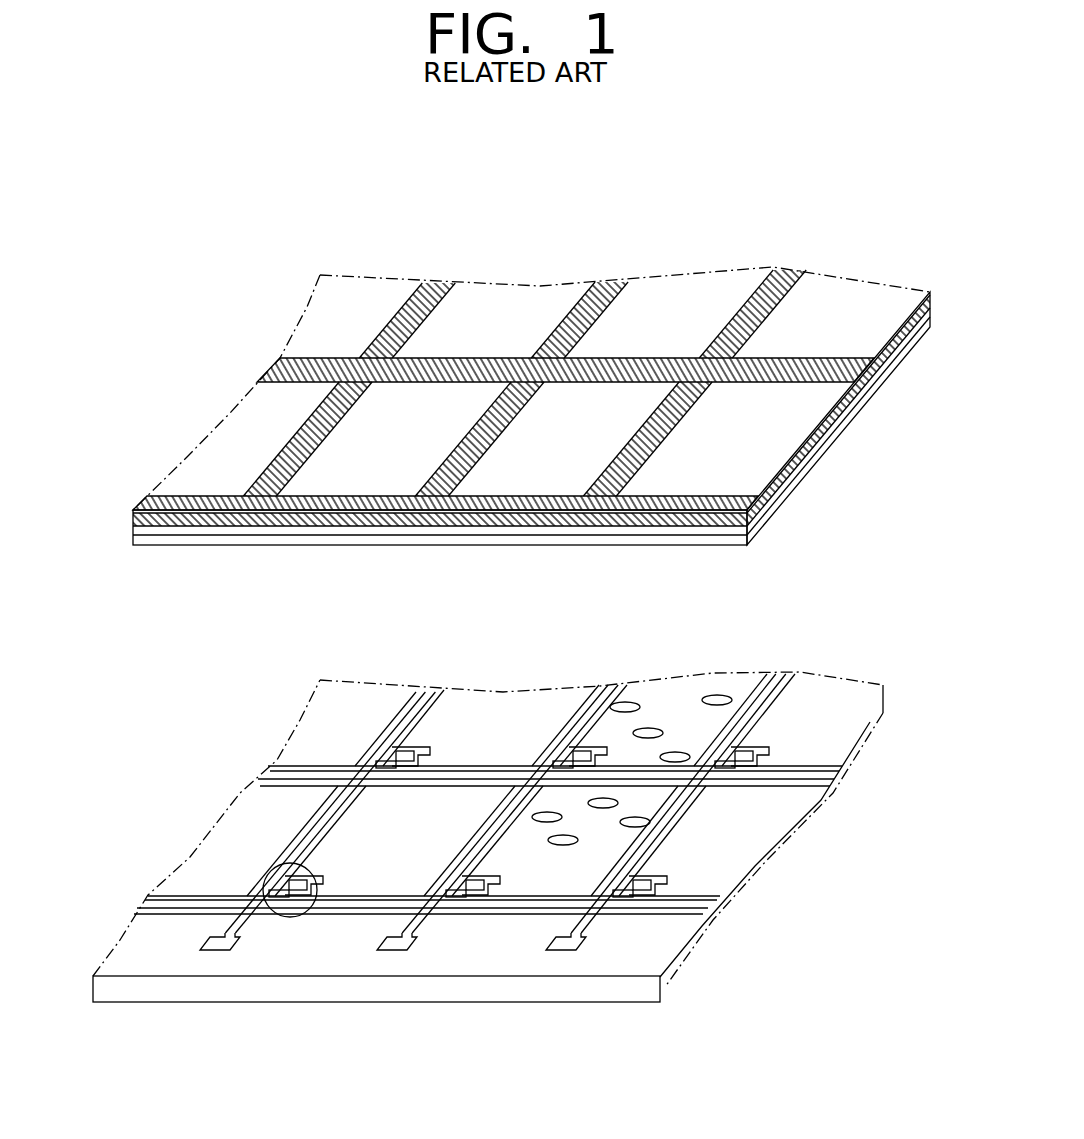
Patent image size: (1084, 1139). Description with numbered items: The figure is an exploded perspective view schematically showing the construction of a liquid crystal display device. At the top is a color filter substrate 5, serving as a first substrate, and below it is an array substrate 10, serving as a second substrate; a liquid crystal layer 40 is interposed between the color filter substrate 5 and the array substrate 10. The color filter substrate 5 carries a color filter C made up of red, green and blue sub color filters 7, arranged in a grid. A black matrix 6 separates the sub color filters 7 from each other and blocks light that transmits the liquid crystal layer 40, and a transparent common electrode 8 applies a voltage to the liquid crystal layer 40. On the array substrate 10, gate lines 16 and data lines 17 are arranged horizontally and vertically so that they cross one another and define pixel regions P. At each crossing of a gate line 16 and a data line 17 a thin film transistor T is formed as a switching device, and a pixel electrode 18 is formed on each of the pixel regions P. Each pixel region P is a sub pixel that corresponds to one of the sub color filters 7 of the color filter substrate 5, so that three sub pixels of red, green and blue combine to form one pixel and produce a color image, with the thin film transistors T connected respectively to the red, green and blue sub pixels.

The color filter C is at (172, 352).
The color filter substrate 5 is at (716, 533).
The black matrix 6 is at (732, 507).
The sub color filters 7 is at (790, 418).
The common electrode 8 is at (697, 542).
The array substrate 10 is at (481, 988).
The gate lines 16 is at (540, 910).
The data lines 17 is at (417, 923).
The pixel electrode 18 is at (632, 867).
The liquid crystal layer 40 is at (648, 733).
The pixel region P is at (715, 845).
The thin film transistor T is at (291, 928).